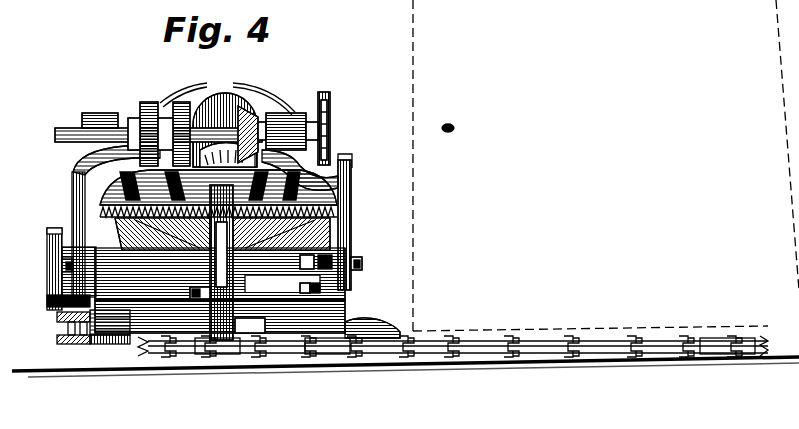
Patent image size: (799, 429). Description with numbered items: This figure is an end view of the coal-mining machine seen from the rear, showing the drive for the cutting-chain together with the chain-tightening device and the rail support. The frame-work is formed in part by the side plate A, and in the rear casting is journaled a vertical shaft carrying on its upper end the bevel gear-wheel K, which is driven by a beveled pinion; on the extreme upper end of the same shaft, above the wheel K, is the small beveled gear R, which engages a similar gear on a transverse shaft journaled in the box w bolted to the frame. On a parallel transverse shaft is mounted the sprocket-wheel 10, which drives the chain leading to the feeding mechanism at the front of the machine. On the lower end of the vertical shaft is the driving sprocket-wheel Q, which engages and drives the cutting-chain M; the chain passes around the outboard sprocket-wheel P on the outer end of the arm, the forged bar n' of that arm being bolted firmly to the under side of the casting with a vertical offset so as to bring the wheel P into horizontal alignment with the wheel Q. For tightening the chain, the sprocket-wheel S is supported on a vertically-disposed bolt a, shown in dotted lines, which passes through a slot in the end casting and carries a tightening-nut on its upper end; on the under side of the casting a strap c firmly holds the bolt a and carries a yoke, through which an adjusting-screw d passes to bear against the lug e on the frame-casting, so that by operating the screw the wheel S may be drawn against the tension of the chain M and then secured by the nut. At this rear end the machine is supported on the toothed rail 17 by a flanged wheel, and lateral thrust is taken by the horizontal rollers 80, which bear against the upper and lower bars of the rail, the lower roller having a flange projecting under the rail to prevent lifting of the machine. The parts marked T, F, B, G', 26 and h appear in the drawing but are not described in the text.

The small beveled gear R is at (148, 107).
The box w is at (228, 128).
The shaft collar T is at (252, 118).
The sprocket-wheel 10 is at (328, 131).
The frame bracket F is at (76, 168).
The bevel gear-wheel K is at (138, 209).
The side plate A is at (73, 210).
The frame post B is at (350, 224).
The guide block G' is at (361, 247).
The flange 26 is at (42, 269).
The strap c is at (275, 397).
The adjusting-screw d is at (196, 287).
The lug e is at (288, 274).
The vertically-disposed bolt a is at (330, 314).
The forged bar n' is at (372, 319).
The toothed rail 17 is at (60, 341).
The horizontal roller 80 is at (88, 344).
The bracket block h is at (138, 322).
The driving sprocket-wheel Q is at (224, 362).
The sprocket-wheel S is at (320, 347).
The cutting-chain M is at (546, 344).
The outboard sprocket-wheel P is at (713, 328).